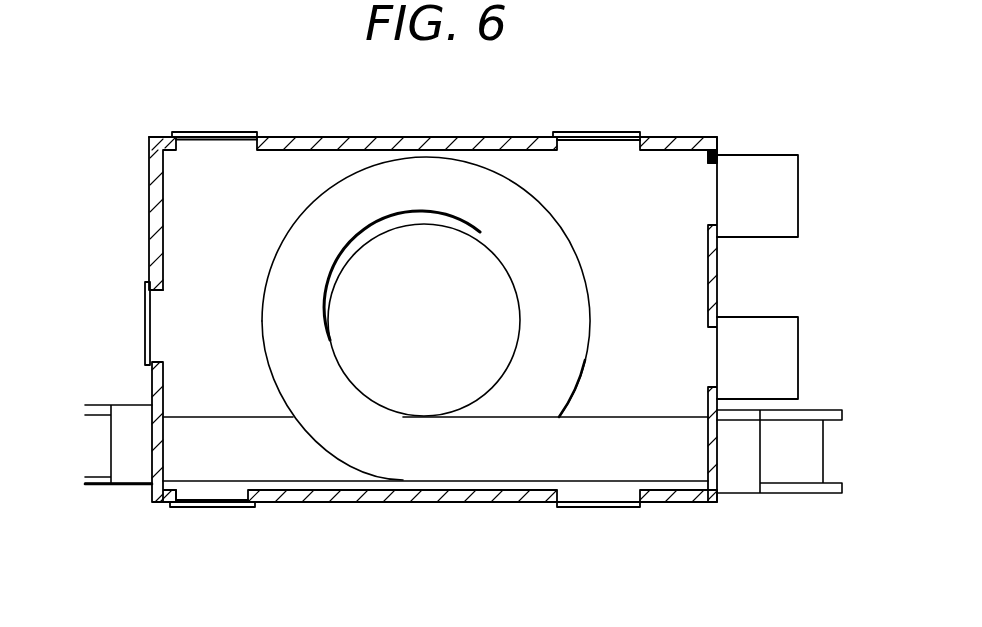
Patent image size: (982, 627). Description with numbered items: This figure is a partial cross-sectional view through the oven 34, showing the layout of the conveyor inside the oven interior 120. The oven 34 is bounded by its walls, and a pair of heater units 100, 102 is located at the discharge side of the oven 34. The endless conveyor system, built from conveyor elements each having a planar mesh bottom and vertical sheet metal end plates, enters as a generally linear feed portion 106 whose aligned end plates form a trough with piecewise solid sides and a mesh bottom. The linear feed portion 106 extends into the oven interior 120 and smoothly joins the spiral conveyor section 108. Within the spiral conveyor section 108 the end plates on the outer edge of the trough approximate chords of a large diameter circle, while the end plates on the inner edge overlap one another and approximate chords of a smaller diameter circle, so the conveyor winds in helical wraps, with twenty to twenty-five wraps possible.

The oven 34 is at (325, 140).
The oven interior 120 is at (195, 229).
The heater unit 102 is at (788, 198).
The heater unit 100 is at (785, 357).
The linear feed portion 106 is at (215, 463).
The spiral conveyor section 108 is at (348, 443).